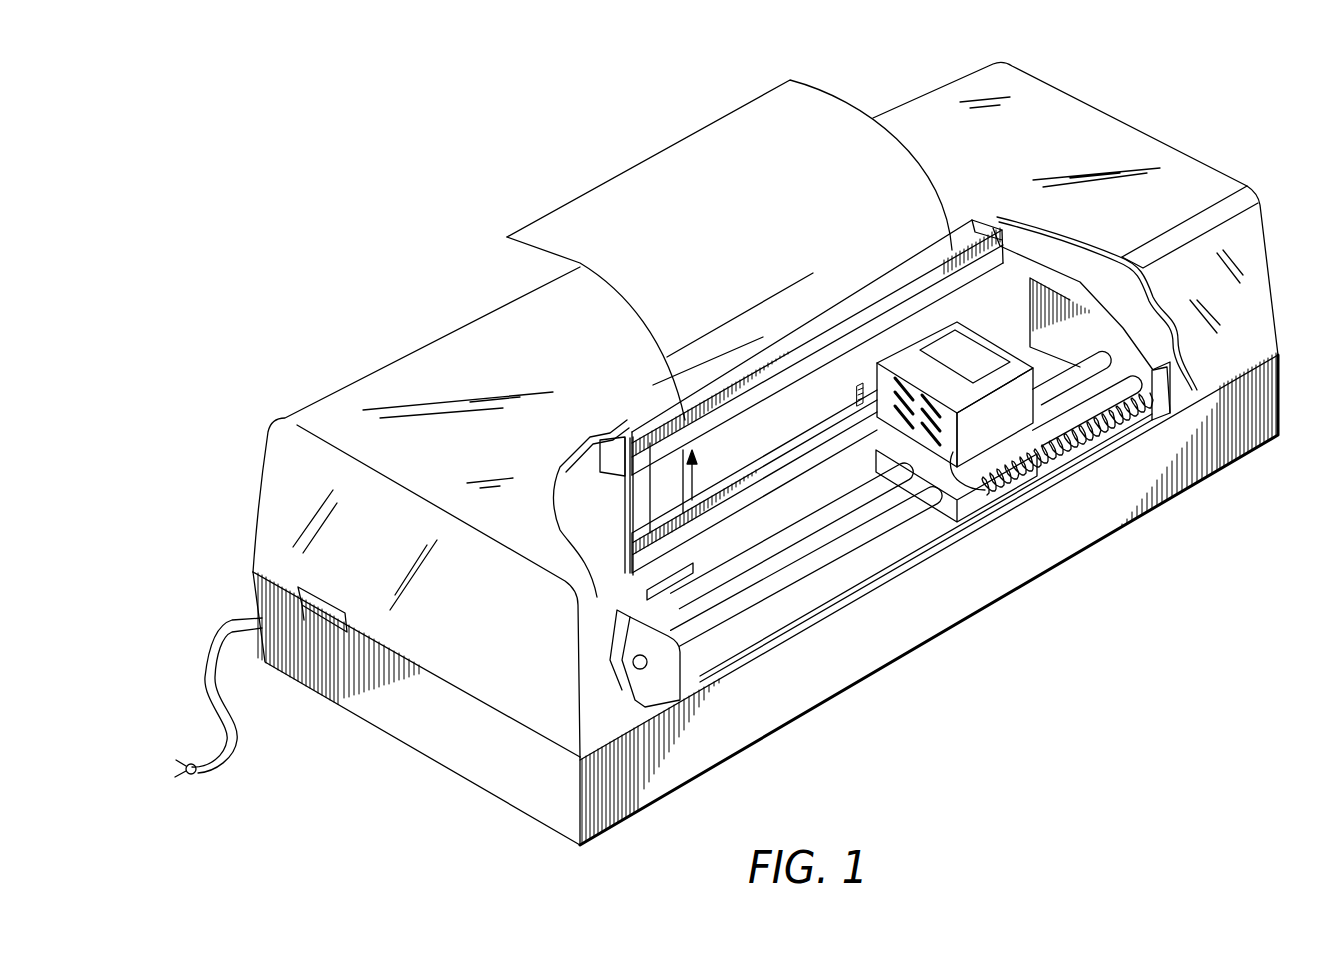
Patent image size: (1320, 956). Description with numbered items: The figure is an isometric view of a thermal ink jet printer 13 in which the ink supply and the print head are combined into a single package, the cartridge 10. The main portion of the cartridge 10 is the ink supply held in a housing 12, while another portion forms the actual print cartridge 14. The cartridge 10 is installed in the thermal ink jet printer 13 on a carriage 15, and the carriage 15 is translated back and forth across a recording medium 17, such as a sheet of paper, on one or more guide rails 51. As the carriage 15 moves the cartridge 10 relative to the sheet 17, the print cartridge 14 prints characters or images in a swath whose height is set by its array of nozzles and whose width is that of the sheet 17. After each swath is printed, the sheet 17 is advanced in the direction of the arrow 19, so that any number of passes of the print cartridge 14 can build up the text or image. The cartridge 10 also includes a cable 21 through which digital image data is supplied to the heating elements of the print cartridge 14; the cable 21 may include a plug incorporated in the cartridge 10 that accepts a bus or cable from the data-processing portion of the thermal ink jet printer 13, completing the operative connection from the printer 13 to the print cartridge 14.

The cartridge 10 is at (935, 419).
The housing 12 is at (1028, 463).
The thermal ink jet printer 13 is at (1226, 99).
The print cartridge 14 is at (857, 388).
The carriage 15 is at (950, 507).
The recording medium 17 is at (640, 178).
The arrow 19 is at (694, 487).
The cable 21 is at (998, 427).
The guide rails 51 is at (807, 568).